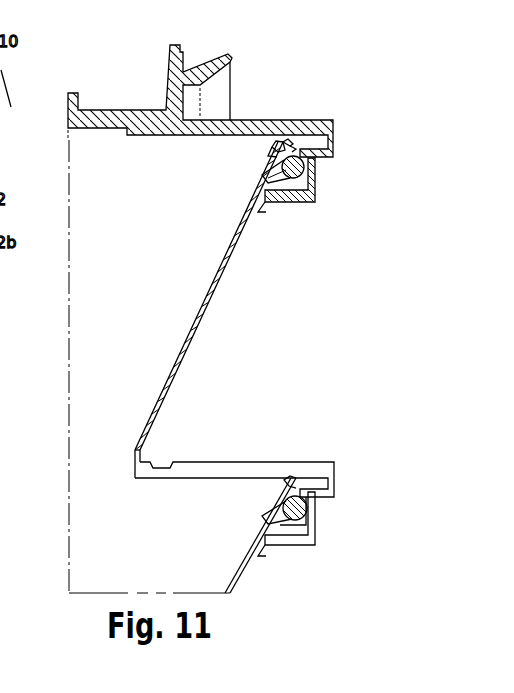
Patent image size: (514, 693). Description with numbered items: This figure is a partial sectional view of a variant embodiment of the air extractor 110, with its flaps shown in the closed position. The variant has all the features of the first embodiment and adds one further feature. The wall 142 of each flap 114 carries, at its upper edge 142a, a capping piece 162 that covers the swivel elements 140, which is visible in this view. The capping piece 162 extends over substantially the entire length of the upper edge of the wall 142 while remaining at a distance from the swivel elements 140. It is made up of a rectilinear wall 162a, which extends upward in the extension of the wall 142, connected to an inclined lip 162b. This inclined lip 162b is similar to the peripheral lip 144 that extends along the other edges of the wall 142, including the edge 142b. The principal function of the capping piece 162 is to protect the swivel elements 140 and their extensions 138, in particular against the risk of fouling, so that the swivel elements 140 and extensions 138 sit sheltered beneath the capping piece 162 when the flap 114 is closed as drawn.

The air extractor 110 is at (333, 120).
The flap 114 is at (232, 252).
The extensions 138 is at (316, 203).
The swivel elements 140 is at (315, 167).
The wall 142 is at (214, 296).
The upper edge 142a is at (266, 175).
The edge 142b is at (134, 450).
The peripheral lip 144 is at (138, 467).
The capping piece 162 is at (275, 140).
The rectilinear wall 162a is at (270, 158).
The inclined lip 162b is at (285, 145).